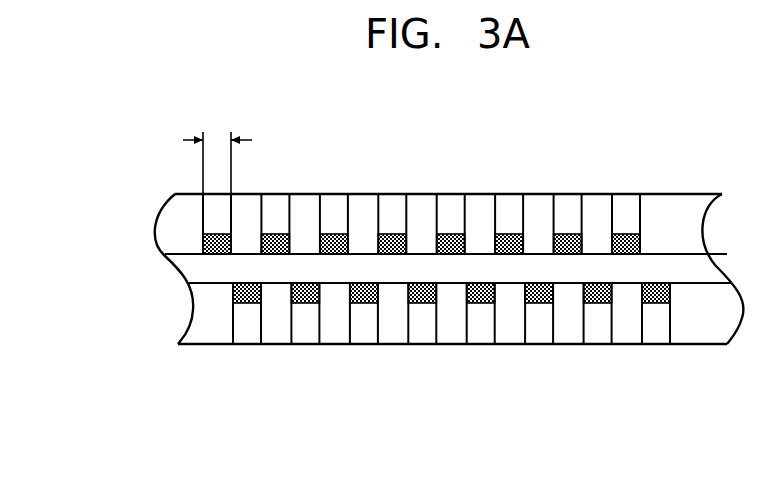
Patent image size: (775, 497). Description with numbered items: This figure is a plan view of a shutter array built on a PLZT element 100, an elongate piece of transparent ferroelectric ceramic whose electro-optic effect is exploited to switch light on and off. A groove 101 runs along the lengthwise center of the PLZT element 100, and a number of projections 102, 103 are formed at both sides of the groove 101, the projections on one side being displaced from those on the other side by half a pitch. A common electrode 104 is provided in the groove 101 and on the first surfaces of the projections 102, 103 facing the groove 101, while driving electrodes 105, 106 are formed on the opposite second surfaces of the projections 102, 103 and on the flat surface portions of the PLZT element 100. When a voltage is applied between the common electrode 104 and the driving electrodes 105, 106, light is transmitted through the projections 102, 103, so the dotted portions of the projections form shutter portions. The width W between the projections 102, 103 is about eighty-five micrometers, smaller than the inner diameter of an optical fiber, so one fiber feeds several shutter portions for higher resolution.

The PLZT element 100 is at (683, 203).
The groove 101 is at (683, 283).
The projection 102 is at (272, 238).
The projection 103 is at (245, 302).
The common electrode 104 is at (542, 268).
The driving electrode 105 is at (450, 205).
The driving electrode 106 is at (362, 335).
The width W is at (217, 151).